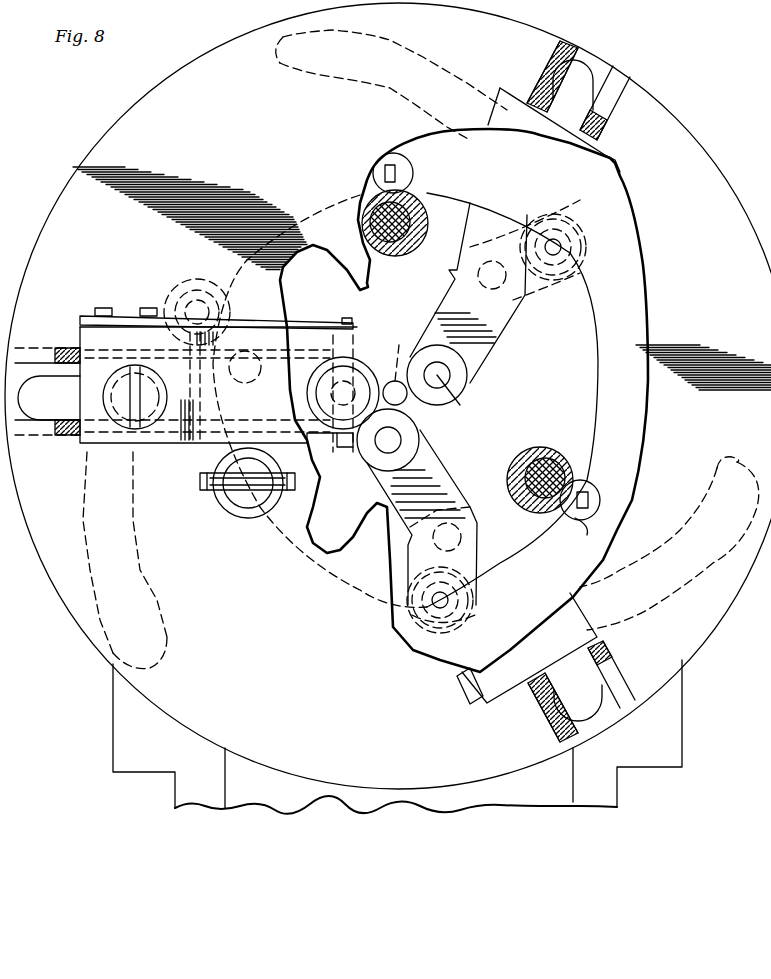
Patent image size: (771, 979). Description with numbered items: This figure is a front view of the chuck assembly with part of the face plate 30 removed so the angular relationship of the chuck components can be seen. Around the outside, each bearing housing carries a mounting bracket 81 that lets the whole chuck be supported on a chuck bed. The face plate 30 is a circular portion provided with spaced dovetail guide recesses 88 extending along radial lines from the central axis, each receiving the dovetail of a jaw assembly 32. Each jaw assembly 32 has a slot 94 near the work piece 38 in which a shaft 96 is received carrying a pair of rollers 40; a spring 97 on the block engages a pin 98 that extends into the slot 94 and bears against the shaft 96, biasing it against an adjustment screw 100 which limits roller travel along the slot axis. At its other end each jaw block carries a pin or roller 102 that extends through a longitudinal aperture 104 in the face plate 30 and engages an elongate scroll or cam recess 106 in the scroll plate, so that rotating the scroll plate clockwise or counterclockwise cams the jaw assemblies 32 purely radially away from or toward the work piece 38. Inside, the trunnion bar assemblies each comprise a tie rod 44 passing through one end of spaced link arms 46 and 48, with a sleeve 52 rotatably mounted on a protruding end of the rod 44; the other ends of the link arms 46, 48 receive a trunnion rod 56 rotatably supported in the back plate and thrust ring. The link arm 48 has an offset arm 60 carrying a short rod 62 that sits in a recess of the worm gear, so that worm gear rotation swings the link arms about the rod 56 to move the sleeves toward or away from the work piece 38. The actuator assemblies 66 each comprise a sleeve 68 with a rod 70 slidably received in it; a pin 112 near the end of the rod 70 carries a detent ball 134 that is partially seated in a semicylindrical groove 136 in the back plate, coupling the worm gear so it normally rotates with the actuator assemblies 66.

The face plate 30 is at (530, 28).
The jaw assembly 32 is at (605, 148).
The work piece 38 is at (397, 369).
The rollers or chuck jaws 40 is at (333, 378).
The tie bar or rod 44 is at (460, 398).
The link arm 46 is at (440, 283).
The link arm 48 is at (575, 270).
The sleeve 52 is at (463, 375).
The trunnion rod 56 is at (478, 270).
The offset portion or arm 60 is at (553, 219).
The short rod 62 is at (578, 228).
The actuator assembly 66 is at (530, 446).
The sleeve 68 is at (415, 203).
The rod 70 is at (428, 225).
The mounting bracket 81 is at (603, 790).
The dovetail guide recess 88 is at (603, 75).
The slot 94 is at (355, 333).
The shaft 96 is at (300, 405).
The spring 97 is at (332, 300).
The pin 98 is at (347, 318).
The adjustment screw 100 is at (345, 450).
The pin or roller 102 is at (125, 410).
The longitudinal aperture 104 is at (570, 70).
The scroll or cam recess 106 is at (430, 40).
The pin 112 is at (358, 217).
The detent ball 134 is at (412, 170).
The semicylindrical groove 136 is at (576, 537).